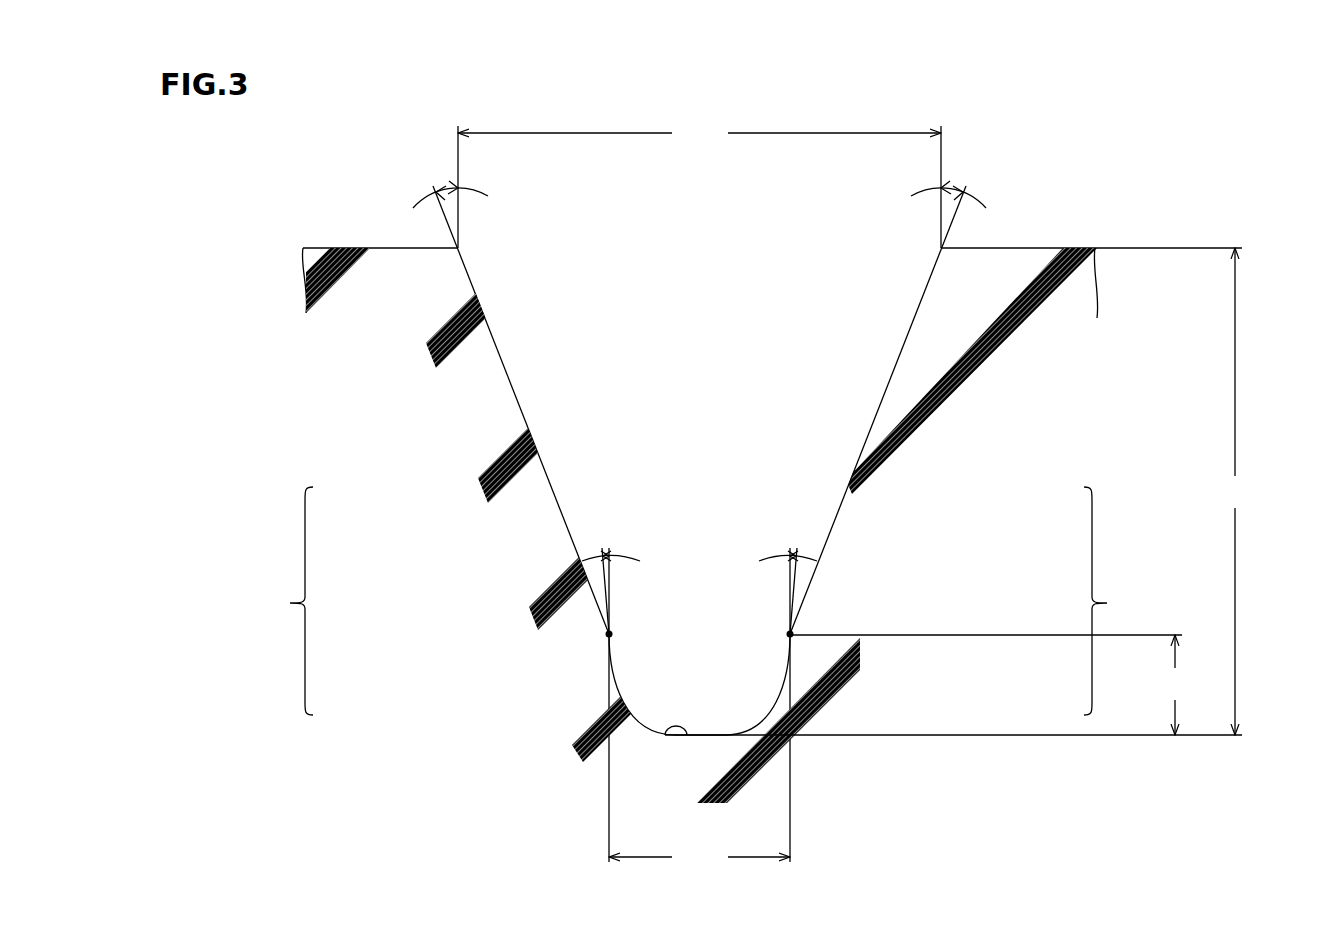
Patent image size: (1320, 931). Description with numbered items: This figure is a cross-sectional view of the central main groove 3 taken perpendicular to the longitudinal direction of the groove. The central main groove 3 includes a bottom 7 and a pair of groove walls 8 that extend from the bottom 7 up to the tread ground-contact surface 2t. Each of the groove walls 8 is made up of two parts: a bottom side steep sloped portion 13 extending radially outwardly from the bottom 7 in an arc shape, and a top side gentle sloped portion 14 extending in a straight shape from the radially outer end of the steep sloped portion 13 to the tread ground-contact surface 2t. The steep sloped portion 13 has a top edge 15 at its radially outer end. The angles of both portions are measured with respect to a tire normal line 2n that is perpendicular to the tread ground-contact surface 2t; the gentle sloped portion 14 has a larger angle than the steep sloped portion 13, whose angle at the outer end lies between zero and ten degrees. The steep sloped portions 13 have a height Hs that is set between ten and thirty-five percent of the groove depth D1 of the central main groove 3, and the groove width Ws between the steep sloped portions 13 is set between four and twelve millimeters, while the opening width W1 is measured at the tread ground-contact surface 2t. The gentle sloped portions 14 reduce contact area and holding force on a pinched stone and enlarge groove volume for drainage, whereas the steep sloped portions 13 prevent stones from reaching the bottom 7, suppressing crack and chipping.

The tread ground-contact surface 2t is at (375, 248).
The tire normal line 2n is at (459, 157).
The central main groove 3 is at (777, 292).
The bottom 7 is at (676, 735).
The groove walls 8 is at (700, 601).
The steep sloped portion 13 is at (611, 650).
The gentle sloped portion 14 is at (568, 510).
The top edge 15 is at (609, 634).
The groove opening width W1 is at (699, 132).
The groove width between steep sloped portions Ws is at (699, 858).
The groove depth D1 is at (1236, 491).
The height of steep sloped portions Hs is at (989, 685).